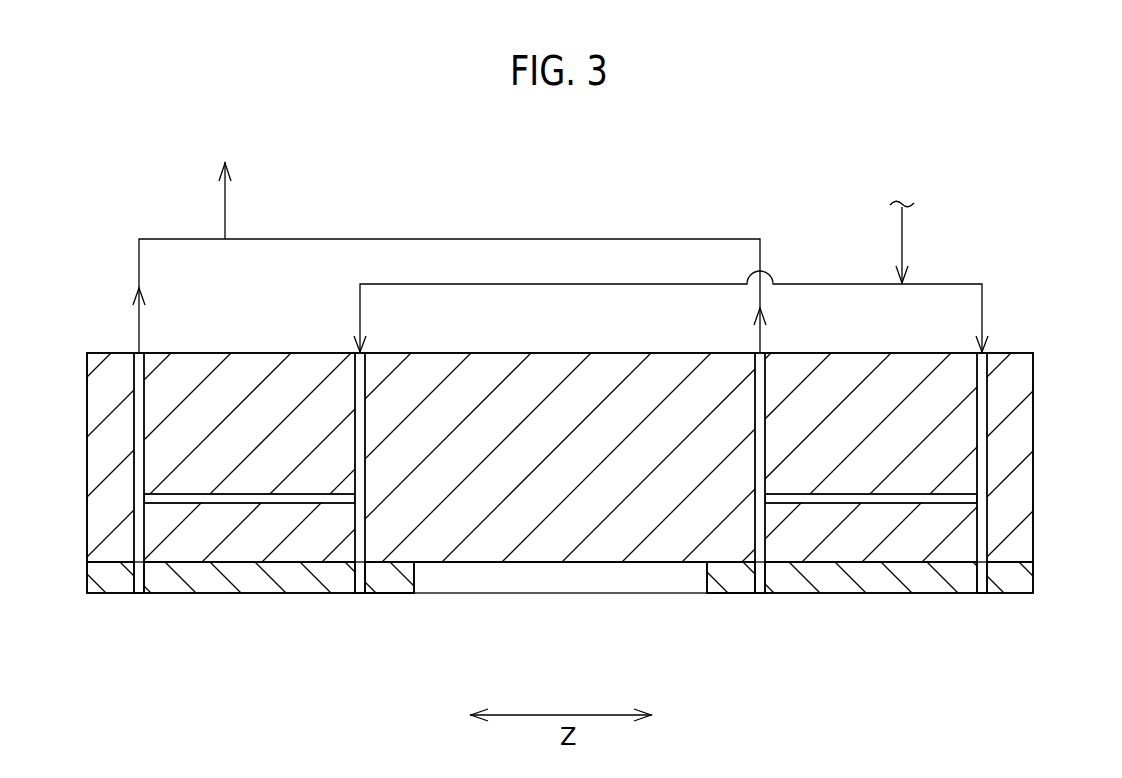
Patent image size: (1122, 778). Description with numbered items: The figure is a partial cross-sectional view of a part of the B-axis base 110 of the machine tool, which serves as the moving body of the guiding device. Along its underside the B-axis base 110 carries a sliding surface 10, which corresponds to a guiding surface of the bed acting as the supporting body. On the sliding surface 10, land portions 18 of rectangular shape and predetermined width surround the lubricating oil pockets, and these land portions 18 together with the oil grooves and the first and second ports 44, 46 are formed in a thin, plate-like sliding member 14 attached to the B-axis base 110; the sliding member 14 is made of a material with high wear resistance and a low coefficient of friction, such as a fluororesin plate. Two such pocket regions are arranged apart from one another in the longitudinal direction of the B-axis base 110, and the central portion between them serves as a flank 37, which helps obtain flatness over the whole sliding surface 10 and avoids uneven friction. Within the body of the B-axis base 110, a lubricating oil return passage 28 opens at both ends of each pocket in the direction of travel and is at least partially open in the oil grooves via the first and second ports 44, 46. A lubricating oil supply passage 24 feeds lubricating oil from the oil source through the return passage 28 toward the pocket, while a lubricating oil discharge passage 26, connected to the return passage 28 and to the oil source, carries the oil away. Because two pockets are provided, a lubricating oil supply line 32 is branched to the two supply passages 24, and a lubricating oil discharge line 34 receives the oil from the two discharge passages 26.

The sliding surface 10 is at (770, 652).
The sliding member 14 is at (398, 579).
The land portion 18 is at (300, 593).
The lubricating oil supply passage 24 is at (361, 418).
The lubricating oil discharge passage 26 is at (143, 412).
The lubricating oil return passage 28 is at (242, 498).
The lubricating oil supply line 32 is at (902, 240).
The lubricating oil discharge line 34 is at (225, 205).
The flank 37 is at (551, 563).
The first port 44 is at (365, 572).
The second port 46 is at (135, 572).
The B-axis base 110 is at (568, 410).